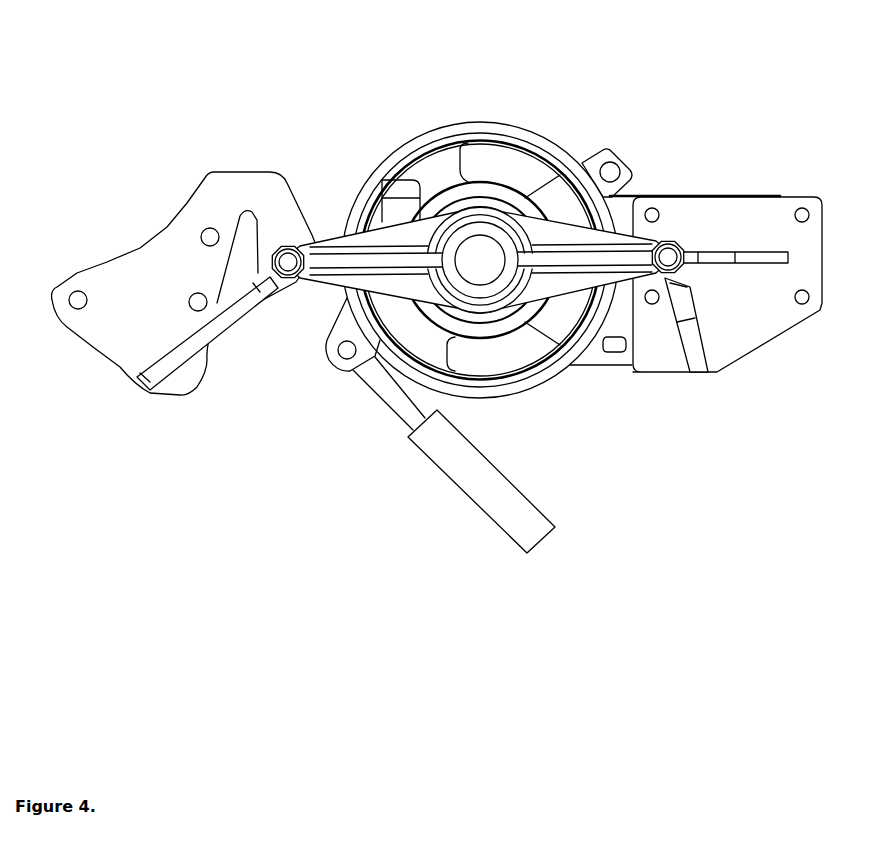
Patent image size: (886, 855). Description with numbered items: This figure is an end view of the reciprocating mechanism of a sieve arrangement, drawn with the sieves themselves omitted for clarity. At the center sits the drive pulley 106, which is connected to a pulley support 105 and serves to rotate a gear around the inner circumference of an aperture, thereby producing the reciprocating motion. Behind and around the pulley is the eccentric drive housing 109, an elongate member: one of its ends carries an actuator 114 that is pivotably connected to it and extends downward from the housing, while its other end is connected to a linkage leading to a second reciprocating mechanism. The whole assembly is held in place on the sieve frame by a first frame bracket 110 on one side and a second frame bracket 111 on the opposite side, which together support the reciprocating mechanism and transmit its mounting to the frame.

The pulley support 105 is at (413, 227).
The drive pulley 106 is at (500, 122).
The eccentric drive housing 109 is at (600, 153).
The first frame bracket 110 is at (110, 335).
The second frame bracket 111 is at (758, 318).
The actuator 114 is at (433, 465).